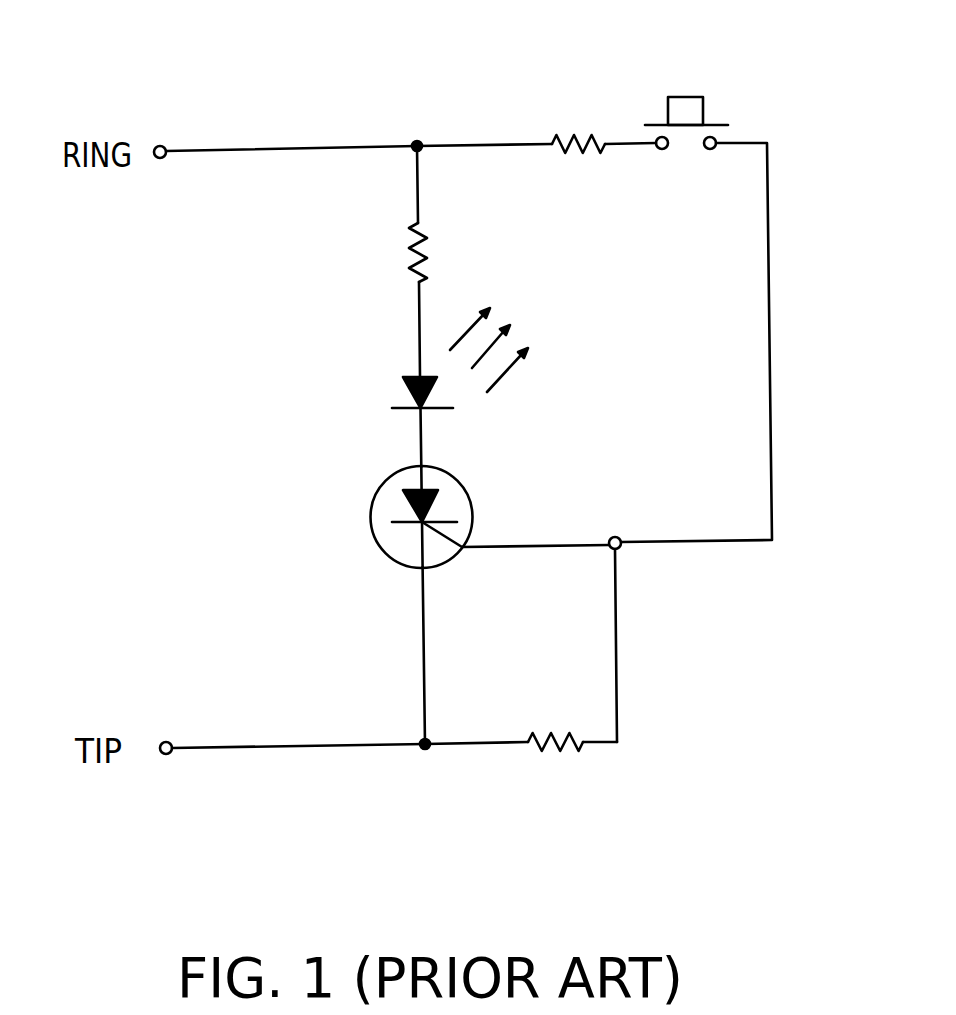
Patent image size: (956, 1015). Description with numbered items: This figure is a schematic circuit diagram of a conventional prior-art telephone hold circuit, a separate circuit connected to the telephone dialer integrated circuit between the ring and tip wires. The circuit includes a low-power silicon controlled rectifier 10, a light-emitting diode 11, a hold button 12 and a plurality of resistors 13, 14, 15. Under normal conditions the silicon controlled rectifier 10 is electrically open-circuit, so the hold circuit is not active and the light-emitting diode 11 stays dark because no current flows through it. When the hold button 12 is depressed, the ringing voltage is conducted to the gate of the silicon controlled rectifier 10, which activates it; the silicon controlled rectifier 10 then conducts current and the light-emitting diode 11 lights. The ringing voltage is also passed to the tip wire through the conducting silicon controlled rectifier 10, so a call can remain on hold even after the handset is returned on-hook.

The silicon controlled rectifier 10 is at (370, 513).
The light-emitting diode 11 is at (403, 385).
The hold button 12 is at (717, 110).
The resistor 13 is at (582, 125).
The resistor 14 is at (400, 247).
The resistor 15 is at (562, 760).